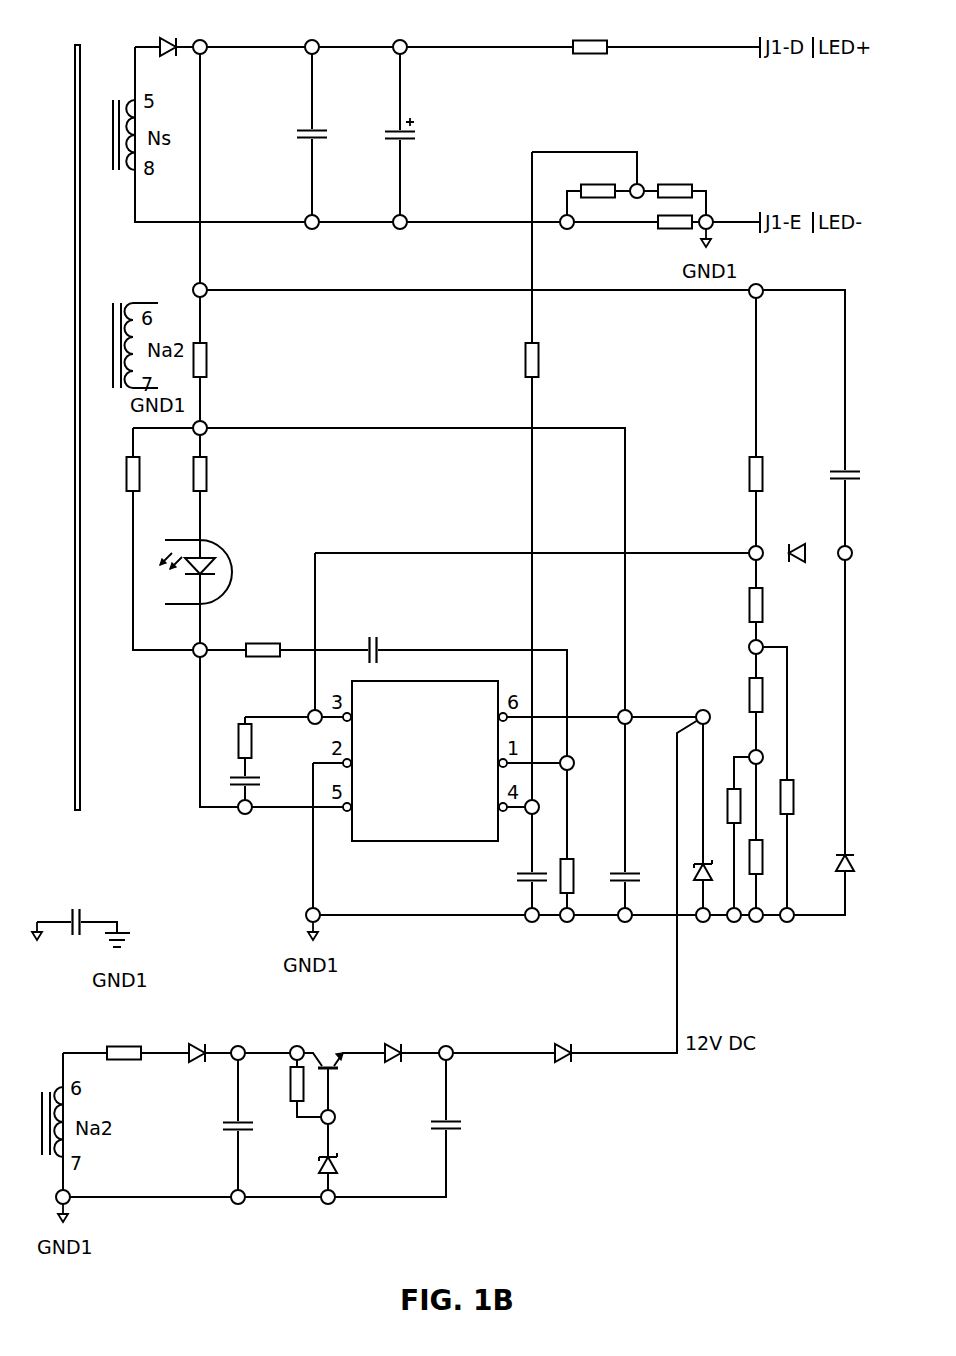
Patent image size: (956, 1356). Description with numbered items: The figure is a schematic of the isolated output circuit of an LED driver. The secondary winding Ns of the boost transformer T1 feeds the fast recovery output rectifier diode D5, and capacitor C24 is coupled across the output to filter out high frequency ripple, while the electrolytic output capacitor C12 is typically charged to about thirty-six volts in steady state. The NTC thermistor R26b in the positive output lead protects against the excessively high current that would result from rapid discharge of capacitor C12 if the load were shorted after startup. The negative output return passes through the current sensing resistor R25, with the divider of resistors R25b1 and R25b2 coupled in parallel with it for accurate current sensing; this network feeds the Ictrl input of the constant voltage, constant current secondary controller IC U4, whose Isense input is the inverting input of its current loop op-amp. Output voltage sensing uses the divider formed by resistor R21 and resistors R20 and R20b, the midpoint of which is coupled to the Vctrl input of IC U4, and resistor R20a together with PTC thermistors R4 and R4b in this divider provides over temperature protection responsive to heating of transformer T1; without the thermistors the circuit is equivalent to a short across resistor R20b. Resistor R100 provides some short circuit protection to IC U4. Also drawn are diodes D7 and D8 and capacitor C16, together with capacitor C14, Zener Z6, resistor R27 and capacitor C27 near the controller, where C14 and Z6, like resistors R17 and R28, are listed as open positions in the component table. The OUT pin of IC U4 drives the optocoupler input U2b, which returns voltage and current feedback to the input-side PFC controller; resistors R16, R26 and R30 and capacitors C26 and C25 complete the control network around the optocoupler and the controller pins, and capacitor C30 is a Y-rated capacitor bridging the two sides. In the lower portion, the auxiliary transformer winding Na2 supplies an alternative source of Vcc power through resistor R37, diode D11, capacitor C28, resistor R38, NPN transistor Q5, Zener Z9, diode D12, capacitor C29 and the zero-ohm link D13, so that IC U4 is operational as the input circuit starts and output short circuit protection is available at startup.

The boost transformer T1 is at (77, 416).
The output rectifier diode D5 is at (168, 32).
The secondary winding Ns is at (142, 135).
The capacitor C24 is at (325, 146).
The electrolytic output capacitor C12 is at (424, 131).
The NTC thermistor R26b is at (589, 60).
The resistor R25b1 is at (583, 179).
The resistor R25b2 is at (686, 179).
The current sensing resistor R25 is at (676, 235).
The transformer output Na2 is at (103, 718).
The resistor R17 is at (221, 360).
The resistor R100 is at (559, 360).
The resistor R28 is at (114, 464).
The resistor R16 is at (221, 474).
The optocoupler input U2b is at (201, 546).
The resistor R26 is at (263, 639).
The capacitor C26 is at (373, 638).
The resistor R30 is at (266, 741).
The capacitor C25 is at (264, 782).
The secondary controller integrated circuit U4 is at (425, 761).
The resistor R27 is at (586, 865).
The capacitor C27 is at (510, 878).
The capacitor C14 is at (639, 866).
The Zener diode Z6 is at (713, 859).
The PTC thermistor R4 is at (724, 796).
The PTC thermistor R4b is at (778, 857).
The voltage divider resistor R20b is at (810, 785).
The resistor R20a is at (726, 695).
The voltage divider resistor R20 is at (733, 605).
The voltage divider resistor R21 is at (775, 461).
The capacitor C16 is at (859, 463).
The diode D7 is at (804, 538).
The diode D8 is at (858, 853).
The capacitor C30 is at (75, 909).
The resistor R37 is at (123, 1042).
The diode D11 is at (197, 1038).
The capacitor C28 is at (225, 1137).
The resistor R38 is at (275, 1084).
The NPN transistor Q5 is at (331, 1048).
The Zener diode Z9 is at (345, 1169).
The diode D12 is at (392, 1038).
The capacitor C29 is at (468, 1126).
The diode position D13 is at (562, 1038).